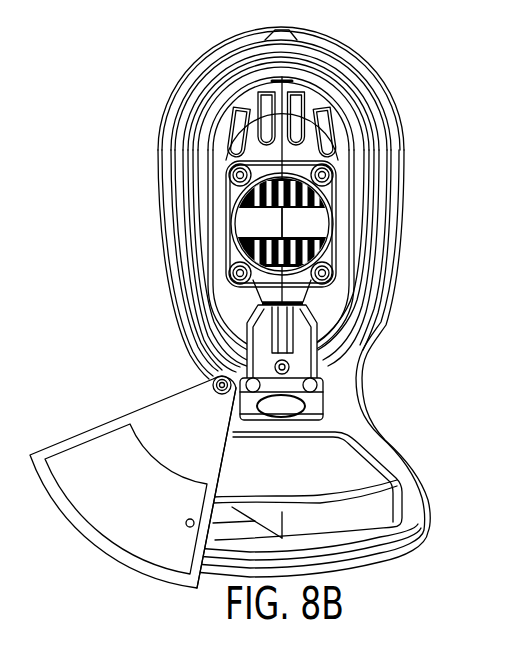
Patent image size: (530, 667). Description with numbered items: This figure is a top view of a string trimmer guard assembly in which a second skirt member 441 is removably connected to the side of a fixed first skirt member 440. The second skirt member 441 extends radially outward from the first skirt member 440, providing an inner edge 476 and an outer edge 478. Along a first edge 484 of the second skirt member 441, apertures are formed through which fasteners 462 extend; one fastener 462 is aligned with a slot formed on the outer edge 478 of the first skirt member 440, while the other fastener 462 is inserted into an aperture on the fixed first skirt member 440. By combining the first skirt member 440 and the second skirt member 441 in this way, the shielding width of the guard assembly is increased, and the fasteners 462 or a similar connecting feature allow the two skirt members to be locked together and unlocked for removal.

The first skirt member 440 is at (376, 428).
The second skirt member 441 is at (95, 428).
The fastener 462 is at (185, 370).
The inner edge 476 is at (282, 523).
The outer edge 478 is at (55, 444).
The first edge 484 is at (193, 447).